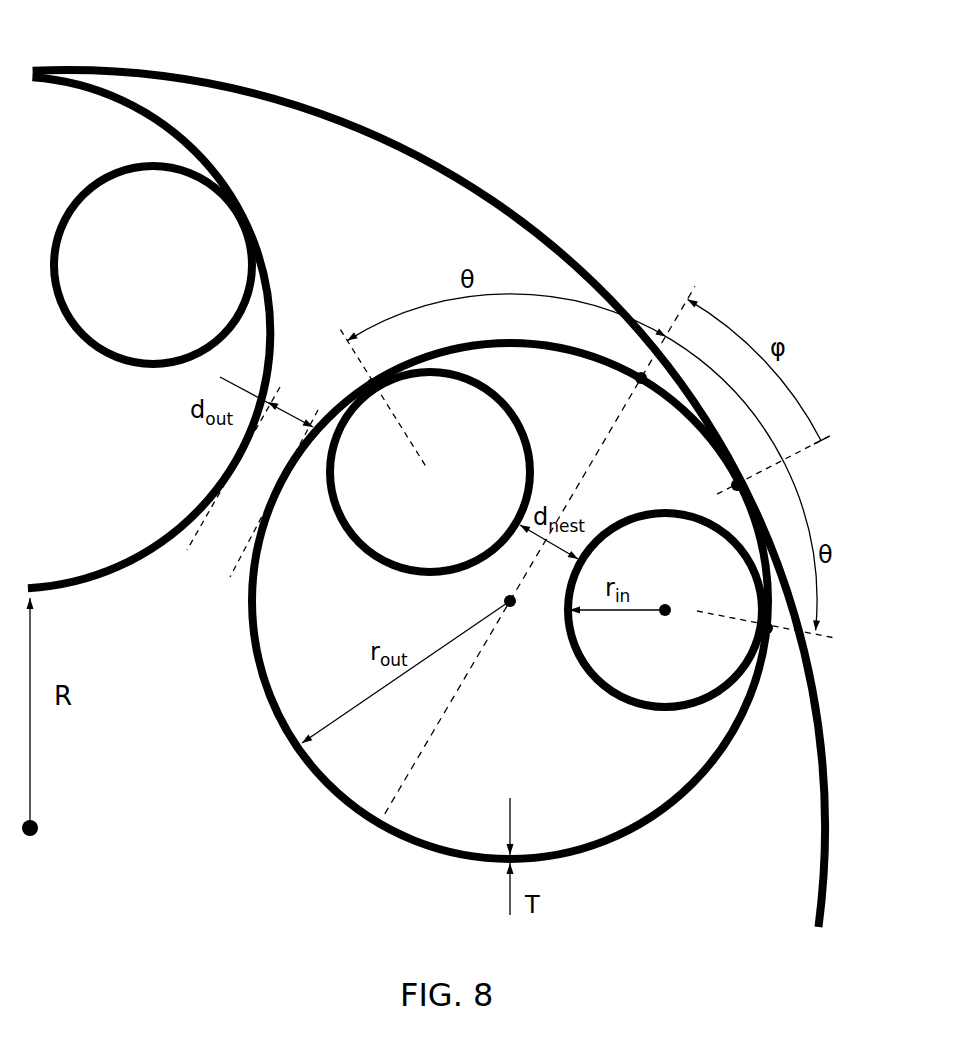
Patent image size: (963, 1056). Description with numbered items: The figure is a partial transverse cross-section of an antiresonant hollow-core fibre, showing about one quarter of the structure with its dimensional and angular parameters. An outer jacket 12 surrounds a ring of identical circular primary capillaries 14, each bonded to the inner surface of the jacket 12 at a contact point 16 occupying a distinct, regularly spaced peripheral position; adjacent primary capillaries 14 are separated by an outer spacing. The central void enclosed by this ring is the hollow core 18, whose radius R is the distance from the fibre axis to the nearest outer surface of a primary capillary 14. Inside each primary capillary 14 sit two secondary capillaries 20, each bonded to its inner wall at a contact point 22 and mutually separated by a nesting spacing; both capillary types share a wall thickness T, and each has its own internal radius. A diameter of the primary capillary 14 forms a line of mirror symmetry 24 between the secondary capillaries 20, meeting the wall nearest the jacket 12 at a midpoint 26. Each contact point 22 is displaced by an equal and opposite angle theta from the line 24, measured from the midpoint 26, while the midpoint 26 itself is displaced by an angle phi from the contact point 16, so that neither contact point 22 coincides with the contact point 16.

The jacket 12 is at (384, 130).
The primary capillary 14 is at (664, 802).
The contact point 16 is at (744, 486).
The hollow core 18 is at (166, 792).
The secondary capillary 20 is at (661, 713).
The contact point 22 is at (366, 385).
The line of mirror symmetry 24 is at (617, 420).
The midpoint 26 is at (636, 381).